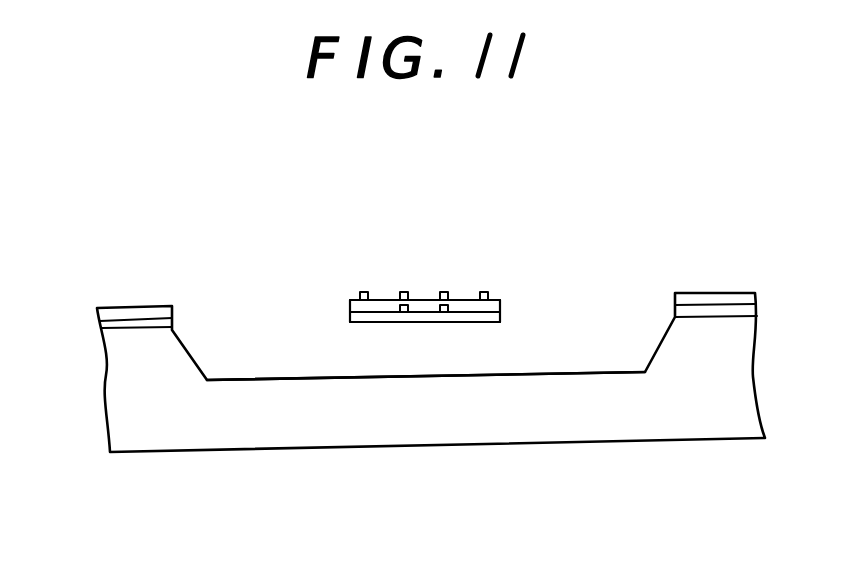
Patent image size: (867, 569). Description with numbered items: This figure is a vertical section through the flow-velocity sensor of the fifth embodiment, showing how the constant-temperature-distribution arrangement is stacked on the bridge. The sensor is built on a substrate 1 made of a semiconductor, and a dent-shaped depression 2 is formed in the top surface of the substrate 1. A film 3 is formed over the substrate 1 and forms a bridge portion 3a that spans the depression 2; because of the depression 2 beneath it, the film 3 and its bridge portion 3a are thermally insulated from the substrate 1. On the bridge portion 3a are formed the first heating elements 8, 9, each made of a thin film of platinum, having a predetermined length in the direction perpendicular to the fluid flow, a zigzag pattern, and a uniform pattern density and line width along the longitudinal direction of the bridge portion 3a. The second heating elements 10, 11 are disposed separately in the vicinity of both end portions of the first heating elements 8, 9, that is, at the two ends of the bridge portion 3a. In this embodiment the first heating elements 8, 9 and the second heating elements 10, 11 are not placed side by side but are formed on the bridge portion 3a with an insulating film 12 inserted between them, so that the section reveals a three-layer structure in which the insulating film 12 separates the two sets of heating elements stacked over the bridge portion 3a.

The substrate 1 is at (153, 427).
The depression 2 is at (232, 380).
The film 3 is at (368, 324).
The bridge portion 3a is at (470, 324).
The first heating element 8 is at (407, 324).
The first heating element 9 is at (443, 324).
The second heating element 10 is at (402, 290).
The second heating element 11 is at (485, 290).
The insulating film 12 is at (495, 302).